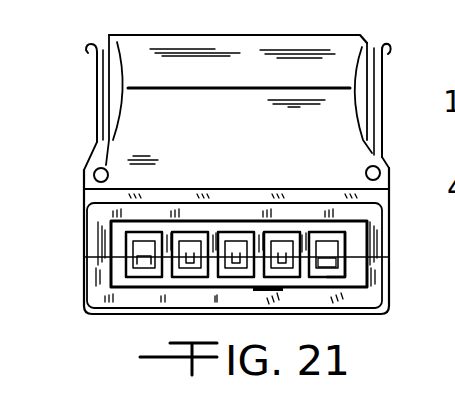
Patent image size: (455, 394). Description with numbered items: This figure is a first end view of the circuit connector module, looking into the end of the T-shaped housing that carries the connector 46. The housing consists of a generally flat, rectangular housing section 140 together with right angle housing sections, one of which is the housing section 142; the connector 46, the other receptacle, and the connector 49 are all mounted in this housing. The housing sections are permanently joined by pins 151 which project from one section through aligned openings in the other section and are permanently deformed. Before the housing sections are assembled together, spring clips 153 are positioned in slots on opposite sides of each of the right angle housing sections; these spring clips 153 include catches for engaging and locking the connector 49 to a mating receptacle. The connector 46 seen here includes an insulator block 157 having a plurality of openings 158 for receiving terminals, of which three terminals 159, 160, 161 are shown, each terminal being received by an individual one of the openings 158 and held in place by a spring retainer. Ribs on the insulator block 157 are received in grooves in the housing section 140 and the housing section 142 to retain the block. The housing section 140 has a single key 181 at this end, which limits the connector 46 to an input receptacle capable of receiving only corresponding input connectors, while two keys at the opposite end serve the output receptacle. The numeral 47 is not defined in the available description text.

The connector 49 is at (178, 35).
The spring clips 153 is at (97, 92).
The pins 151 is at (106, 170).
The right angle housing section 142 is at (84, 230).
The flat rectangular housing section 140 is at (86, 293).
The contact frame 47 is at (392, 237).
The insulator block 157 is at (130, 258).
The openings 158 is at (140, 247).
The terminal 159 is at (189, 250).
The terminal 160 is at (237, 252).
The terminal 161 is at (281, 250).
The connector 46 is at (338, 280).
The single key 181 is at (254, 288).